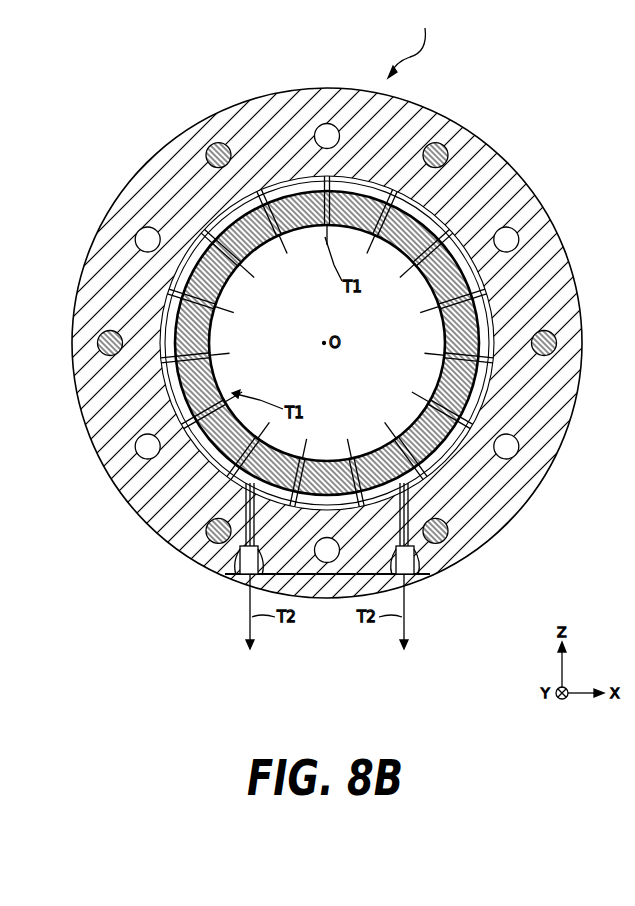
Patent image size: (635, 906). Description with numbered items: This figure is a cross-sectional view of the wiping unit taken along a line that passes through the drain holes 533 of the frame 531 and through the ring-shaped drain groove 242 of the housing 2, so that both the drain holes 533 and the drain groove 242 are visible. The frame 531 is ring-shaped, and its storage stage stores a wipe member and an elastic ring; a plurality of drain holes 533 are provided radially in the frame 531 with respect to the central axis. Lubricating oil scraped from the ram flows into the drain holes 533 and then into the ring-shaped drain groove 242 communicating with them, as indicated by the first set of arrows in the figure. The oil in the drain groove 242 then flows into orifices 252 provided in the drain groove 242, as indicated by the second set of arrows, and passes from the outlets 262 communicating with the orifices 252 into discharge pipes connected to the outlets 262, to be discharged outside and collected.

The housing 2 is at (337, 343).
The drain groove 242 is at (363, 303).
The orifices 252 is at (241, 577).
The outlets 262 is at (247, 590).
The frame 531 is at (327, 277).
The drain holes 533 is at (293, 291).